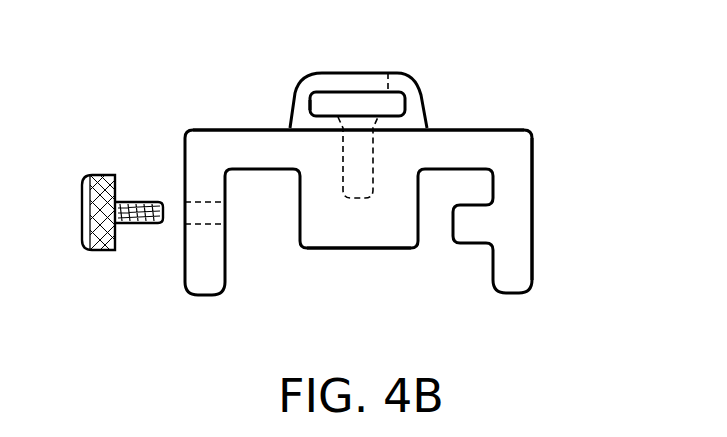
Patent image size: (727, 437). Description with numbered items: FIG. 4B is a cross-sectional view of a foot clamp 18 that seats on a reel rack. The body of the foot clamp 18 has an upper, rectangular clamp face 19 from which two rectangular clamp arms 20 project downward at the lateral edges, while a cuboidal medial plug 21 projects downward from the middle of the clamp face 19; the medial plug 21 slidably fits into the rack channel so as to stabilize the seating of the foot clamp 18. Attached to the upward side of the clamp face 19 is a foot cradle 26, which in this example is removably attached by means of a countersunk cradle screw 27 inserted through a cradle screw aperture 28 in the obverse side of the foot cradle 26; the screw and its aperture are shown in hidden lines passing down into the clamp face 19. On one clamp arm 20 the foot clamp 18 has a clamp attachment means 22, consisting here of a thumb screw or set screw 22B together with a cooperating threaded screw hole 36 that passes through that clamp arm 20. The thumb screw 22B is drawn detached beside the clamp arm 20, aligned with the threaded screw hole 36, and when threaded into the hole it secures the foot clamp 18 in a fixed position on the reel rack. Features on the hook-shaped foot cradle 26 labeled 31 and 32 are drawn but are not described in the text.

The foot clamp 18 is at (570, 104).
The clamp face 19 is at (473, 128).
The clamp arms 20 is at (524, 163).
The medial plug 21 is at (385, 243).
The clamp attachment means 22 is at (92, 270).
The thumb screw or set screw 22B is at (138, 254).
The foot cradle 26 is at (428, 73).
The cradle screw 27 is at (343, 200).
The cradle screw aperture 28 is at (361, 84).
The hook opening 31 is at (345, 100).
The hook opening edge 32 is at (313, 103).
The threaded screw hole 36 is at (203, 213).